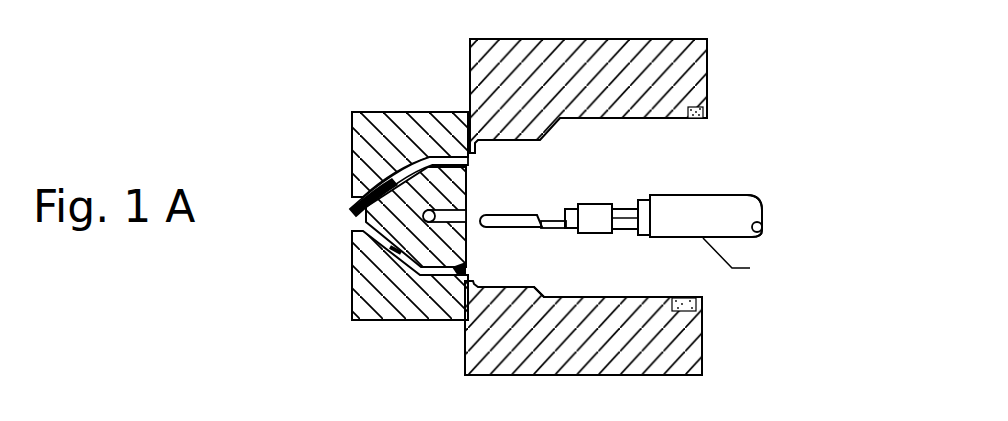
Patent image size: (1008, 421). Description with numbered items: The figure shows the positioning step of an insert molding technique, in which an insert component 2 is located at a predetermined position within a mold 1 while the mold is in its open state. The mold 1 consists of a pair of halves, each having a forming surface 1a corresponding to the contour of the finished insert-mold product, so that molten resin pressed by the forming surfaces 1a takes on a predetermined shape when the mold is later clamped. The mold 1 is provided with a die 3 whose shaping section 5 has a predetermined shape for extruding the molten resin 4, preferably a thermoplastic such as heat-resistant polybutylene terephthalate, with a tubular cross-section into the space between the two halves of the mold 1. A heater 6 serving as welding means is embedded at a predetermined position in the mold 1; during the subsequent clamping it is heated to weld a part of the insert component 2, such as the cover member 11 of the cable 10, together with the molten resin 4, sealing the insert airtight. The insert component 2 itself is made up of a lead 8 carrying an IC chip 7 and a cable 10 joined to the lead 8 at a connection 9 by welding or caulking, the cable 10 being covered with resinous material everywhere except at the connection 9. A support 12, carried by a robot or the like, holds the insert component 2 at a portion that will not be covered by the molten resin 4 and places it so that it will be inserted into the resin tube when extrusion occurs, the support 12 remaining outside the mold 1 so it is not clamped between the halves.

The mold 1 is at (678, 345).
The forming surface 1a is at (502, 287).
The insert component 2 is at (792, 207).
The die 3 is at (357, 95).
The molten resin 4 is at (367, 232).
The shaping section 5 is at (393, 263).
The heater 6 is at (708, 88).
The IC chip 7 is at (507, 215).
The lead 8 is at (557, 230).
The connection 9 is at (595, 206).
The cable 10 is at (682, 180).
The cover member 11 is at (738, 221).
The support 12 is at (708, 193).